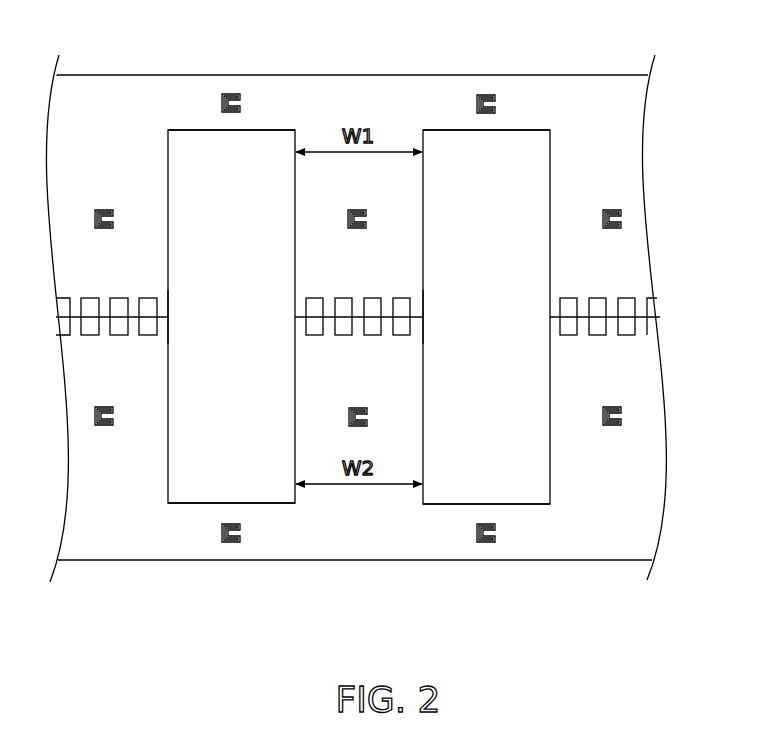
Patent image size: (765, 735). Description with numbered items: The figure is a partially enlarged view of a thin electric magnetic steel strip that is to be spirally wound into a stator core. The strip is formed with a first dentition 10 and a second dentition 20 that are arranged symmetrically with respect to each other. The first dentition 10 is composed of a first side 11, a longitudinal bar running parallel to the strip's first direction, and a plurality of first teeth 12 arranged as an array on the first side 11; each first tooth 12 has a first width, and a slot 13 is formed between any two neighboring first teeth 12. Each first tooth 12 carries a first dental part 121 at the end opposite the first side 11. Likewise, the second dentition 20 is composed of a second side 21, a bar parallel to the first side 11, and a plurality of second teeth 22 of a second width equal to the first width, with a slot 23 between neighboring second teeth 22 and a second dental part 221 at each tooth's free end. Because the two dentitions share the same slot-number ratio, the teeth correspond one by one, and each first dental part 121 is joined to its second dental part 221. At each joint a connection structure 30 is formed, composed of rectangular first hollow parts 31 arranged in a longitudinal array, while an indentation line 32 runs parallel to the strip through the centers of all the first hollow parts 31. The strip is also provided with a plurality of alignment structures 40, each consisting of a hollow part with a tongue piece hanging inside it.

The first dentition 10 is at (360, 58).
The first side 11 is at (108, 103).
The first tooth 12 is at (155, 223).
The first dental part 121 is at (132, 292).
The slot 13 is at (255, 162).
The second dentition 20 is at (360, 577).
The second side 21 is at (108, 532).
The second tooth 22 is at (153, 445).
The second dental part 221 is at (132, 343).
The slot 23 is at (255, 473).
The connection structure 30 is at (358, 325).
The first hollow part 31 is at (152, 307).
The indentation line 32 is at (158, 318).
The alignment structure 40 is at (213, 102).